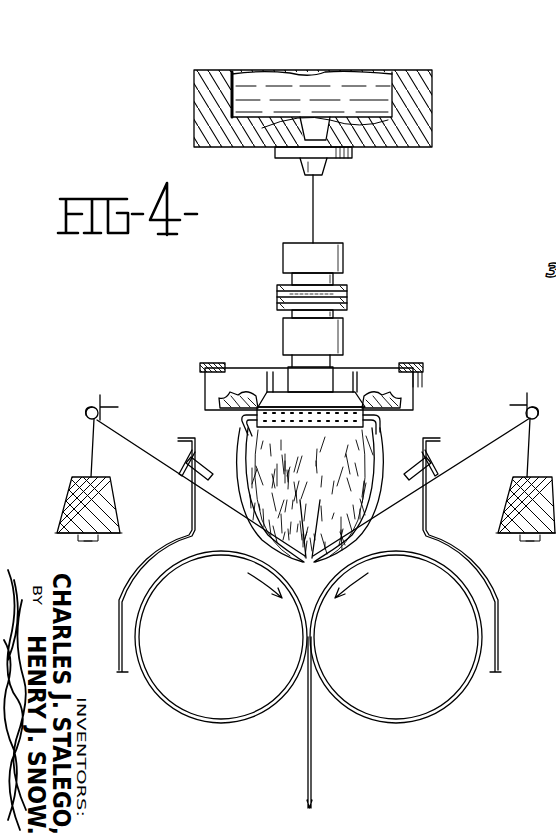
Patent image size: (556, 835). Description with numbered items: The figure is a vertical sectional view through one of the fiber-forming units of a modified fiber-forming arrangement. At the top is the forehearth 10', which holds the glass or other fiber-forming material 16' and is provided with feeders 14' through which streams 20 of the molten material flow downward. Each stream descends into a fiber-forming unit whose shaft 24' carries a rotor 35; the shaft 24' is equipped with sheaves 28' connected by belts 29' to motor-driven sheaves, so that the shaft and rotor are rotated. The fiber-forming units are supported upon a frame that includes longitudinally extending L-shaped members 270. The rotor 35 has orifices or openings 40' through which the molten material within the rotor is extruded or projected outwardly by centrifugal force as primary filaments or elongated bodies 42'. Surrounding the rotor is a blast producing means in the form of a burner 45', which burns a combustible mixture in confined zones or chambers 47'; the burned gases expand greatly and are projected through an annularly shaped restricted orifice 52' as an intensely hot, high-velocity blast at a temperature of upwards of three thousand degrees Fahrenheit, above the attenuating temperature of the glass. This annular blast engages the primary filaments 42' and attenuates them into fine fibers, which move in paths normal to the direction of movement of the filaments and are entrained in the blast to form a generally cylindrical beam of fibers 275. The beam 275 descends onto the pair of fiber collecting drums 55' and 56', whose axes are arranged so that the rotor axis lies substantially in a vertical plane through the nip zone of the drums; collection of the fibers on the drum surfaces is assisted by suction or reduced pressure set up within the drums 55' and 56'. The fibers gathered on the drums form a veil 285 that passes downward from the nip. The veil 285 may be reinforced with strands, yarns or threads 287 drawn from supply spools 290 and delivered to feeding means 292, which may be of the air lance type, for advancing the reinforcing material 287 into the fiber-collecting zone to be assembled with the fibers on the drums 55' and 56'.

The forehearth 10' is at (346, 108).
The fiber-forming material 16' is at (332, 80).
The feeders 14' is at (335, 165).
The streams 20 is at (315, 212).
The shaft 24' is at (342, 305).
The sheaves 28' is at (284, 289).
The belts 29' is at (348, 290).
The burner 45' is at (329, 370).
The L-shaped members 270 is at (424, 368).
The rotor 35 is at (310, 379).
The confined zones or chambers 47' is at (310, 366).
The orifices or openings 40' is at (310, 432).
The annularly shaped restricted orifice 52' is at (226, 426).
The primary filaments 42' is at (399, 425).
The beam of fibers 275 is at (385, 452).
The reinforcing strands, yarns or threads 287 is at (462, 444).
The feeding means 292 is at (434, 474).
The supply spools 290 is at (72, 480).
The fiber collecting drum 55' is at (219, 650).
The fiber collecting drum 56' is at (404, 640).
The veil 285 is at (313, 722).